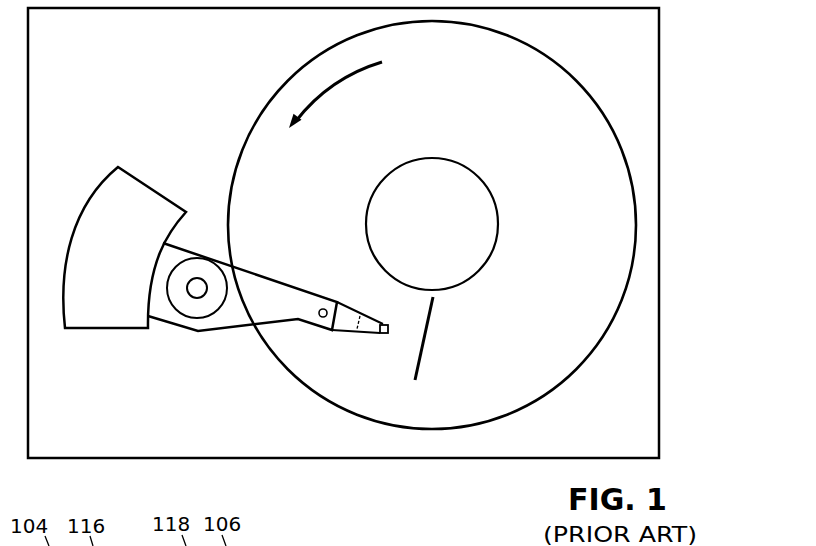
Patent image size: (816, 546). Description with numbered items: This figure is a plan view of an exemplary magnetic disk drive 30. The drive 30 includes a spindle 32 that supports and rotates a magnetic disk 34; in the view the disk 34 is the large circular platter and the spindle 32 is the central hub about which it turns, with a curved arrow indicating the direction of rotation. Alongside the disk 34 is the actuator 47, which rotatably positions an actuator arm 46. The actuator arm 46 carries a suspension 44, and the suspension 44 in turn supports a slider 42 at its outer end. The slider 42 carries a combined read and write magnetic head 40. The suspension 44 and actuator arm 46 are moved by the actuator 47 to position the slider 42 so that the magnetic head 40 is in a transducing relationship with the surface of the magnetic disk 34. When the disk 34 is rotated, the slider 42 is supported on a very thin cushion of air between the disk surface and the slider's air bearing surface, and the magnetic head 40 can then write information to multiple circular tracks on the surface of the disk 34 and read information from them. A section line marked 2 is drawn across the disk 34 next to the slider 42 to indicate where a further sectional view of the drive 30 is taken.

The magnetic disk drive 30 is at (683, 39).
The spindle 32 is at (470, 167).
The magnetic disk 34 is at (578, 246).
The magnetic head 40 is at (388, 333).
The slider 42 is at (386, 322).
The suspension 44 is at (343, 331).
The actuator arm 46 is at (290, 287).
The actuator 47 is at (158, 198).
The section line 2- 2 is at (446, 309).